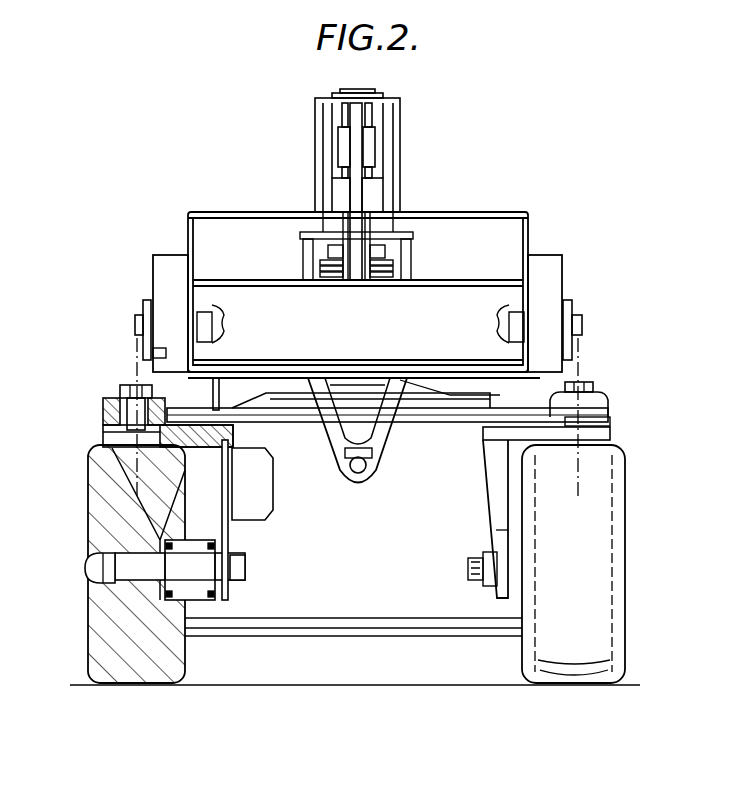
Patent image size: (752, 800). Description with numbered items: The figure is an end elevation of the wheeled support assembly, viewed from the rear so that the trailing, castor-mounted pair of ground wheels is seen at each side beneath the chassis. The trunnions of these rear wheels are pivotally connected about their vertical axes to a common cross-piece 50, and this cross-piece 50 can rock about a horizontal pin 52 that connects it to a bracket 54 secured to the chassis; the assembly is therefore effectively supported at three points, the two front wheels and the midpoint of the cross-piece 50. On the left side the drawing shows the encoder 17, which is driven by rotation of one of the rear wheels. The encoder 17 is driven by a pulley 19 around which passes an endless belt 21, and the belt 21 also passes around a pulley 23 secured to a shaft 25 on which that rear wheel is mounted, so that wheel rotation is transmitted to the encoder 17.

The encoder 17 is at (257, 503).
The pulley 19 is at (165, 472).
The endless belt 21 is at (225, 518).
The pulley 23 is at (230, 588).
The shaft 25 is at (173, 565).
The cross-piece 50 is at (452, 432).
The horizontal pin 52 is at (358, 466).
The bracket 54 is at (370, 470).